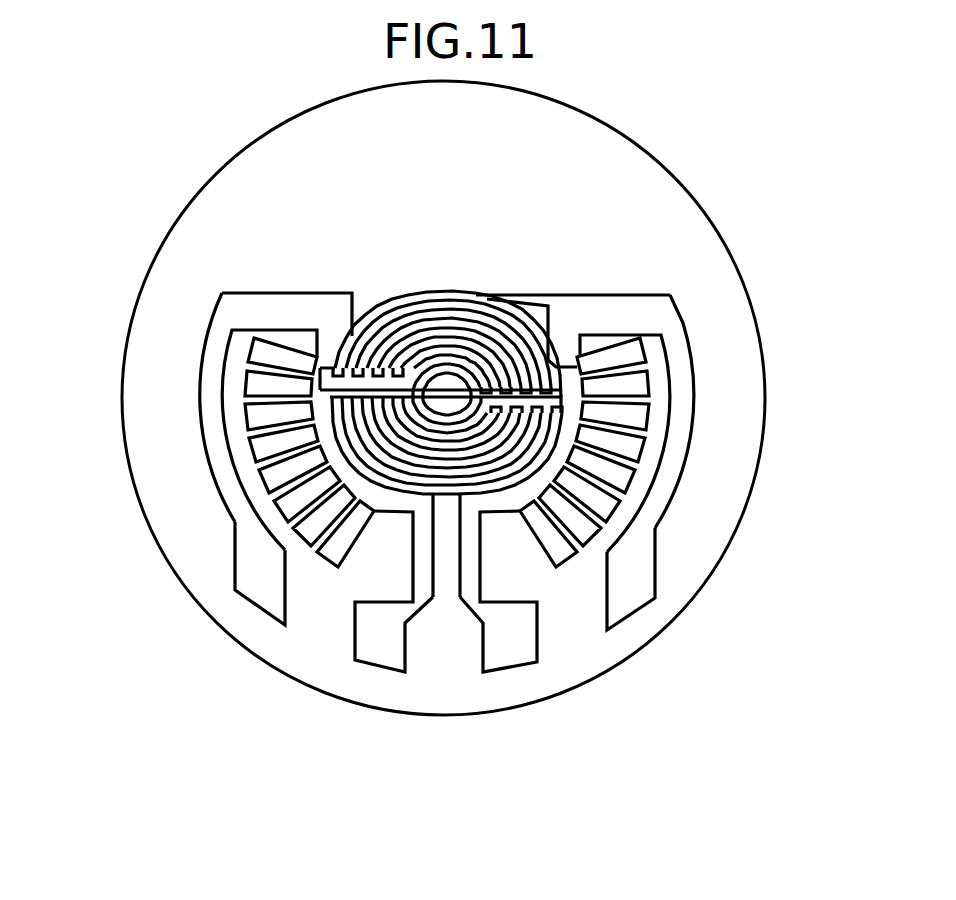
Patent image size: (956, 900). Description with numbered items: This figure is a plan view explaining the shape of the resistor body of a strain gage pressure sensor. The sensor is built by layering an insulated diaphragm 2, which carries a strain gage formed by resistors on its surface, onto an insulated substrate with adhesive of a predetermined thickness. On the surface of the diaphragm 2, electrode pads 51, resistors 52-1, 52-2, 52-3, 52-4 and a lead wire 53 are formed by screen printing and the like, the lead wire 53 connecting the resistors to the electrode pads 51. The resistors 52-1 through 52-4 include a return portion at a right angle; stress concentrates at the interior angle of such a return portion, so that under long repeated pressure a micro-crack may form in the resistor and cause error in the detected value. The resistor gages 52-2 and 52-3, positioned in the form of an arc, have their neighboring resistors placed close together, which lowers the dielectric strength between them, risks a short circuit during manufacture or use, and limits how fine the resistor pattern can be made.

The insulated diaphragm 2 is at (636, 158).
The electrode pads 51 is at (253, 598).
The resistor 52-1 is at (450, 513).
The resistor gage 52-2 is at (268, 478).
The resistor gage 52-3 is at (647, 420).
The resistor 52-4 is at (448, 288).
The lead wire 53 is at (213, 428).